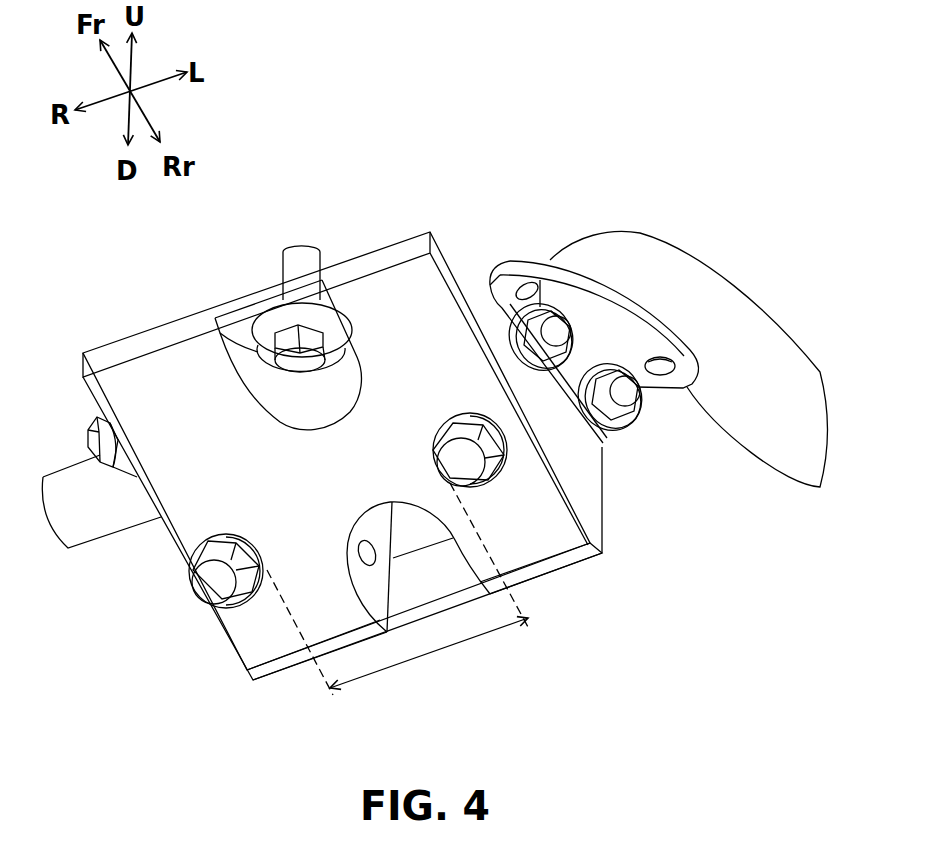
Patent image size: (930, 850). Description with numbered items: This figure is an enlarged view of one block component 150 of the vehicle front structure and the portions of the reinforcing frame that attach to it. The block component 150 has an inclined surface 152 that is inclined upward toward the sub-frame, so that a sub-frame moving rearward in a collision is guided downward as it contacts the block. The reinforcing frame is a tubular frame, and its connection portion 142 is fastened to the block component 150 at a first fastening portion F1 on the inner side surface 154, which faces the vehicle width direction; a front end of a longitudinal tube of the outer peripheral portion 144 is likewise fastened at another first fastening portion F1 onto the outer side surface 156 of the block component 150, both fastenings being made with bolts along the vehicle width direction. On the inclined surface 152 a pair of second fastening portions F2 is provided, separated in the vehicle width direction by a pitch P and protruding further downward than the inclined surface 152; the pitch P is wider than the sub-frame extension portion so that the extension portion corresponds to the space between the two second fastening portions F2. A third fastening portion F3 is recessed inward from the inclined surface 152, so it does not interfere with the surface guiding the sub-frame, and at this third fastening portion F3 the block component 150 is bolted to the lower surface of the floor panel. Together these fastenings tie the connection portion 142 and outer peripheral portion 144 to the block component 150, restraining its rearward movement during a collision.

The block component 150 is at (421, 172).
The inclined surface 152 is at (388, 312).
The inner side surface 154 is at (92, 393).
The outer side surface 156 is at (453, 265).
The connection portion 142 is at (75, 507).
The outer peripheral portion 144 is at (722, 320).
The first fastening portion F1 is at (583, 347).
The second fastening portion F2 is at (245, 613).
The third fastening portion F3 is at (282, 327).
The pitch P is at (397, 589).